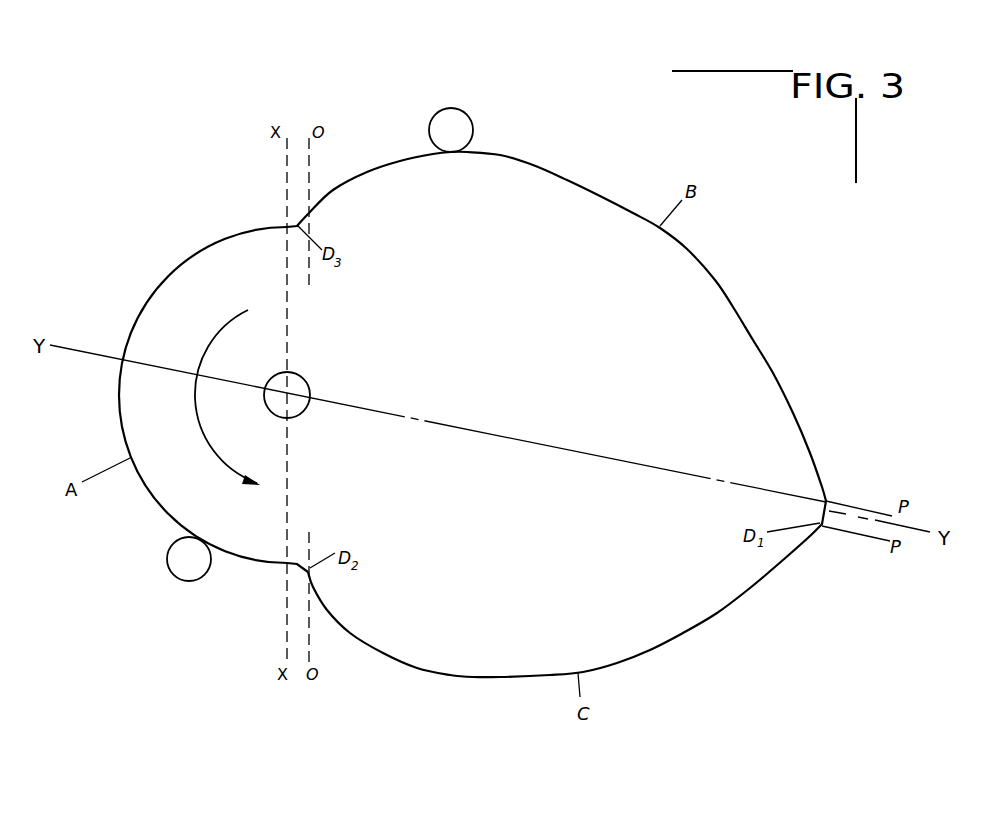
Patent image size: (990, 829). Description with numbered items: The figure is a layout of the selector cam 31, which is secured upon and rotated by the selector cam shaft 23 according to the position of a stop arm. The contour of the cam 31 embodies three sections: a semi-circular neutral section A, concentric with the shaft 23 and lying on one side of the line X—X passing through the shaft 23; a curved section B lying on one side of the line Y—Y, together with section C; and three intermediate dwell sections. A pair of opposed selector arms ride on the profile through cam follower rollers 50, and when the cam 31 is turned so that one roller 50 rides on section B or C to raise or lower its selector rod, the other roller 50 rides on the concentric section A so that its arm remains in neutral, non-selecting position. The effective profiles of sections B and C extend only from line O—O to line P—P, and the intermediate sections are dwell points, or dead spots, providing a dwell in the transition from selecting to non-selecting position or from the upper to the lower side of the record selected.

The selector cam shaft 23 is at (312, 383).
The selector cam 31 is at (500, 662).
The cam follower rollers 50 is at (457, 130).